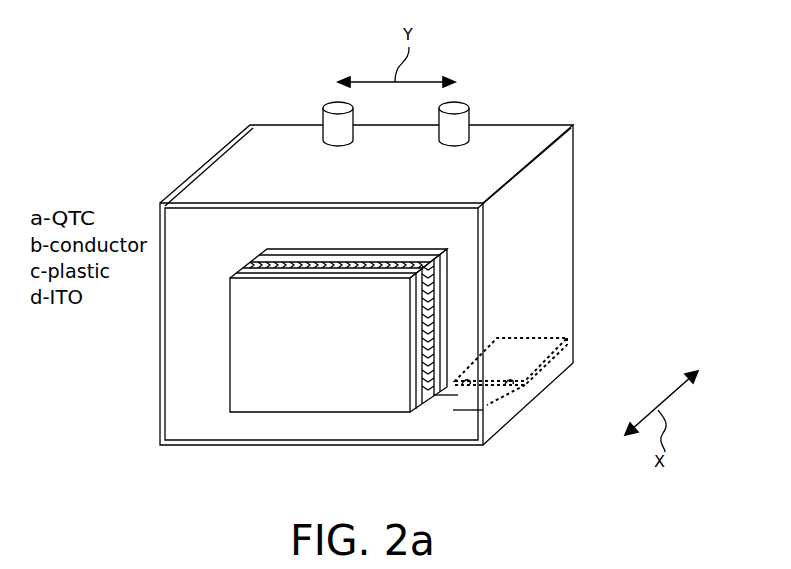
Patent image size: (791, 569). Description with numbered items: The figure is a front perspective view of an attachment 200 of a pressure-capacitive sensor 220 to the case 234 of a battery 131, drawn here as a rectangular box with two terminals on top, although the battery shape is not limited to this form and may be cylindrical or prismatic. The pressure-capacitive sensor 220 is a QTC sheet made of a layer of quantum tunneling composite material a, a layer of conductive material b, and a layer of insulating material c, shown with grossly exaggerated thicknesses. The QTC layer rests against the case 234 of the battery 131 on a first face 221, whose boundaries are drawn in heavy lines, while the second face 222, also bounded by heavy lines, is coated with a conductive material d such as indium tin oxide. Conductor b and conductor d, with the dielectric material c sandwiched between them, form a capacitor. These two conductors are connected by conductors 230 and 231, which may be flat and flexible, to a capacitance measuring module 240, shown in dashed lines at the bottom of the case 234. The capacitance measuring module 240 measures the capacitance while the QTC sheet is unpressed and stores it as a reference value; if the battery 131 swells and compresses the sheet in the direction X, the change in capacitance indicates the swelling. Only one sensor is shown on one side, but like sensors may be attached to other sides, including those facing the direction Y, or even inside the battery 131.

The attachment 200 is at (176, 75).
The battery 131 is at (160, 445).
The case 234 is at (160, 373).
The pressure-capacitive sensor 220 is at (230, 412).
The first face 221 is at (382, 240).
The second face 222 is at (380, 272).
The conductor 230 is at (440, 397).
The conductor 231 is at (467, 412).
The capacitance measuring module 240 is at (575, 342).